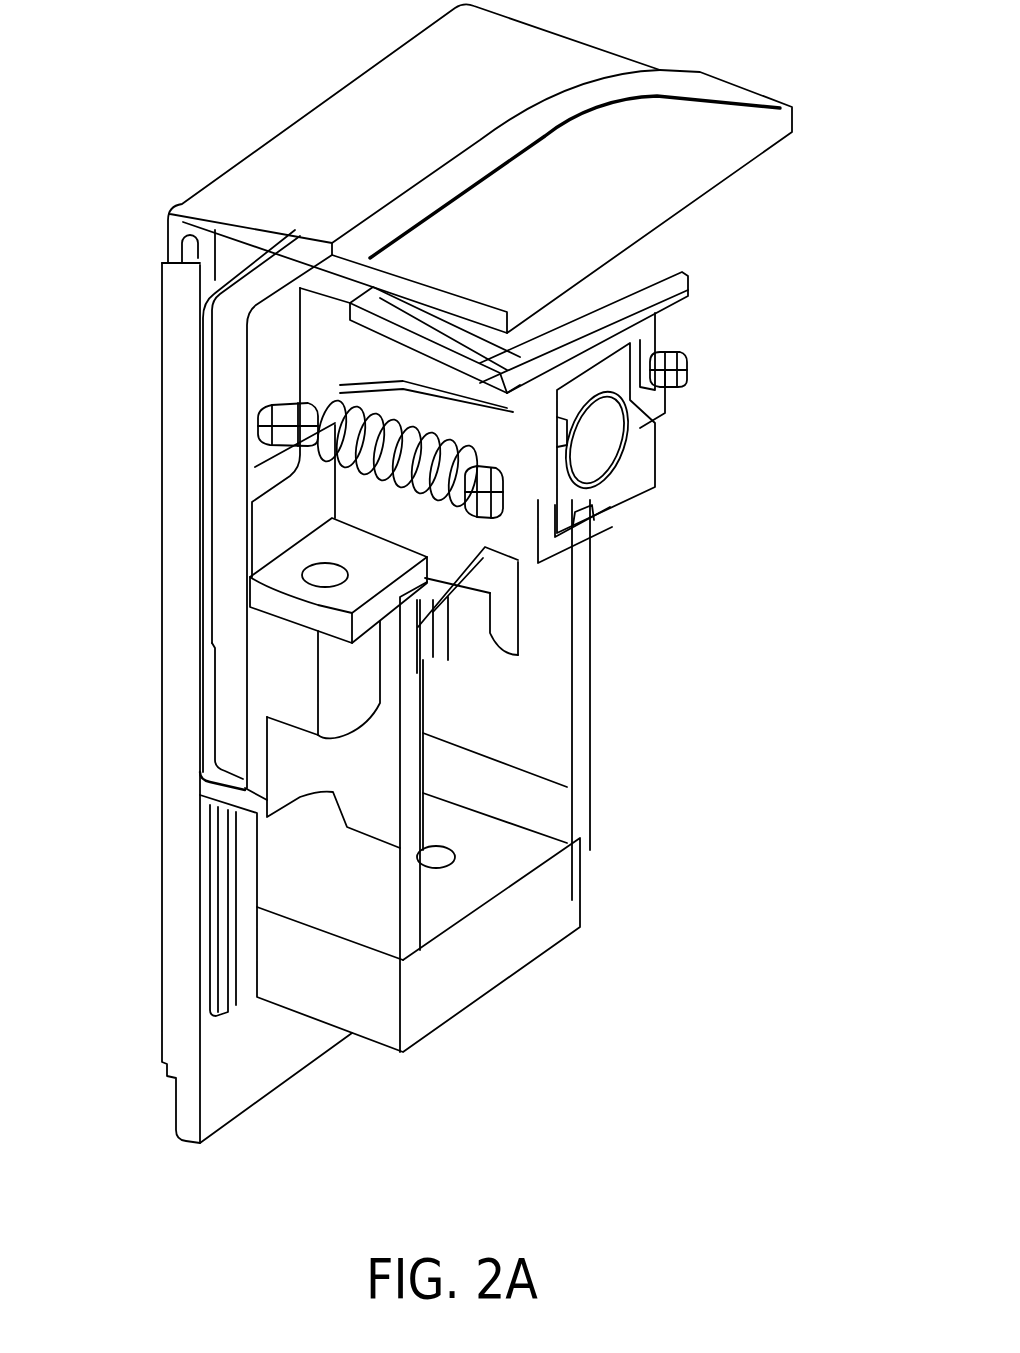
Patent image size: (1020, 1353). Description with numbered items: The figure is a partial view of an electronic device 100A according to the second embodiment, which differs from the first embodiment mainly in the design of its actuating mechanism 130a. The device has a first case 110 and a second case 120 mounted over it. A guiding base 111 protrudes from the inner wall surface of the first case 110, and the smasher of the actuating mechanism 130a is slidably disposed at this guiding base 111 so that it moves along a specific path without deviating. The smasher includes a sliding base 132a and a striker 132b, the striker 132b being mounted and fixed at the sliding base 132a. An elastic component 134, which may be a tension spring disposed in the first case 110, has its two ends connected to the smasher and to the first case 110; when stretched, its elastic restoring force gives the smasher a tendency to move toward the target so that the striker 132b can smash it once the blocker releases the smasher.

The electronic device 100A is at (472, 591).
The first case 110 is at (372, 686).
The guiding base 111 is at (523, 548).
The second case 120 is at (744, 117).
The actuating mechanism 130a is at (472, 586).
The sliding base 132a is at (627, 360).
The striker 132b is at (597, 457).
The elastic component 134 is at (400, 468).